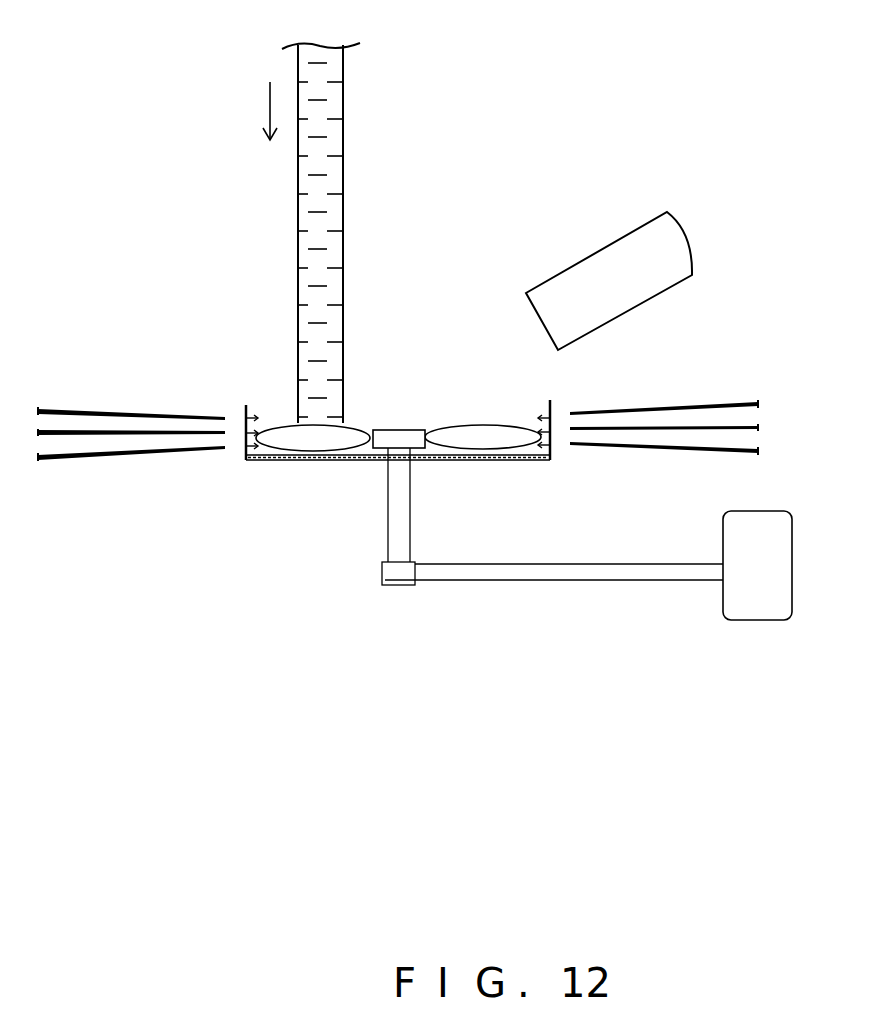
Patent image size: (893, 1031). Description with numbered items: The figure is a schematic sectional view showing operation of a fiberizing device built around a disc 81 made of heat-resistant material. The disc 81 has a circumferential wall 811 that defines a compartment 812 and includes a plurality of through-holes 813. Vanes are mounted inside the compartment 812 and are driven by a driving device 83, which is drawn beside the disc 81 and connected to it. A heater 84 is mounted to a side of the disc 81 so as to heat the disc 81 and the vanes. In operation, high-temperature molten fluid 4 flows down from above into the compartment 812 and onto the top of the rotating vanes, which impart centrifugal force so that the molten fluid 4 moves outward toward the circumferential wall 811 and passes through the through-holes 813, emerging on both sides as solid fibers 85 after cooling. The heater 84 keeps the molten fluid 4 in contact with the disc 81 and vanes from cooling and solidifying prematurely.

The high-temperature molten fluid 4 is at (343, 172).
The disc 81 is at (259, 468).
The circumferential wall 811 is at (246, 405).
The compartment 812 is at (357, 450).
The through-holes 813 is at (245, 448).
The driving device 83 is at (743, 582).
The heater 84 is at (580, 257).
The solid fibers 85 is at (637, 409).